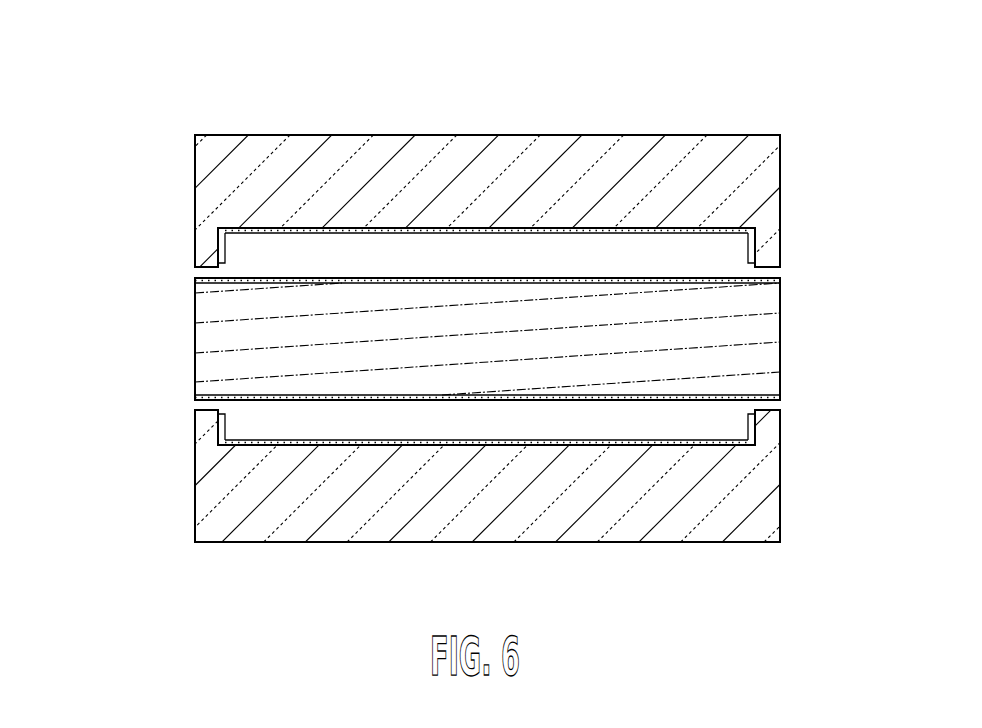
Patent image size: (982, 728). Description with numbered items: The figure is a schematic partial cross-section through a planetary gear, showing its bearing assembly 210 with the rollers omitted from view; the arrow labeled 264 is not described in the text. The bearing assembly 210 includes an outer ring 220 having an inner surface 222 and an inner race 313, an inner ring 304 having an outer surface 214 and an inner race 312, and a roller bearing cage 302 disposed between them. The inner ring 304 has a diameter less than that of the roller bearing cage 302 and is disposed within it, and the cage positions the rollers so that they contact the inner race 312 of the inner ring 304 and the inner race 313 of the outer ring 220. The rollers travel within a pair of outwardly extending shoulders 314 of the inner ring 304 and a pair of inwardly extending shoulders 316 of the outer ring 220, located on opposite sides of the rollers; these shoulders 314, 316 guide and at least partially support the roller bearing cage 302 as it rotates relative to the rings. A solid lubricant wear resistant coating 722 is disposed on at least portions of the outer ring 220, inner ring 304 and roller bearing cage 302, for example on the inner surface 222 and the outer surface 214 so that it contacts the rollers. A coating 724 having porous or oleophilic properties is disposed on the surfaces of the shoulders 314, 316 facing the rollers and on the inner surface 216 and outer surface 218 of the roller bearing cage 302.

The bearing assembly 210 is at (74, 229).
The chamber body portion 264 is at (822, 73).
The outer ring 220 is at (190, 144).
The inner ring 304 is at (784, 499).
The roller bearing cage 302 is at (190, 350).
The inner race 313 is at (512, 226).
The inner race 312 is at (505, 445).
The inwardly extending shoulders 316 is at (225, 258).
The outwardly extending shoulders 314 is at (222, 416).
The outer surface 218 is at (684, 274).
The inner surface 216 is at (714, 406).
The inner surface 222 is at (326, 240).
The outer surface 214 is at (339, 436).
The solid lubricant wear resistant coating 722 is at (383, 234).
The coating having porous or oleophilic properties 724 is at (225, 233).